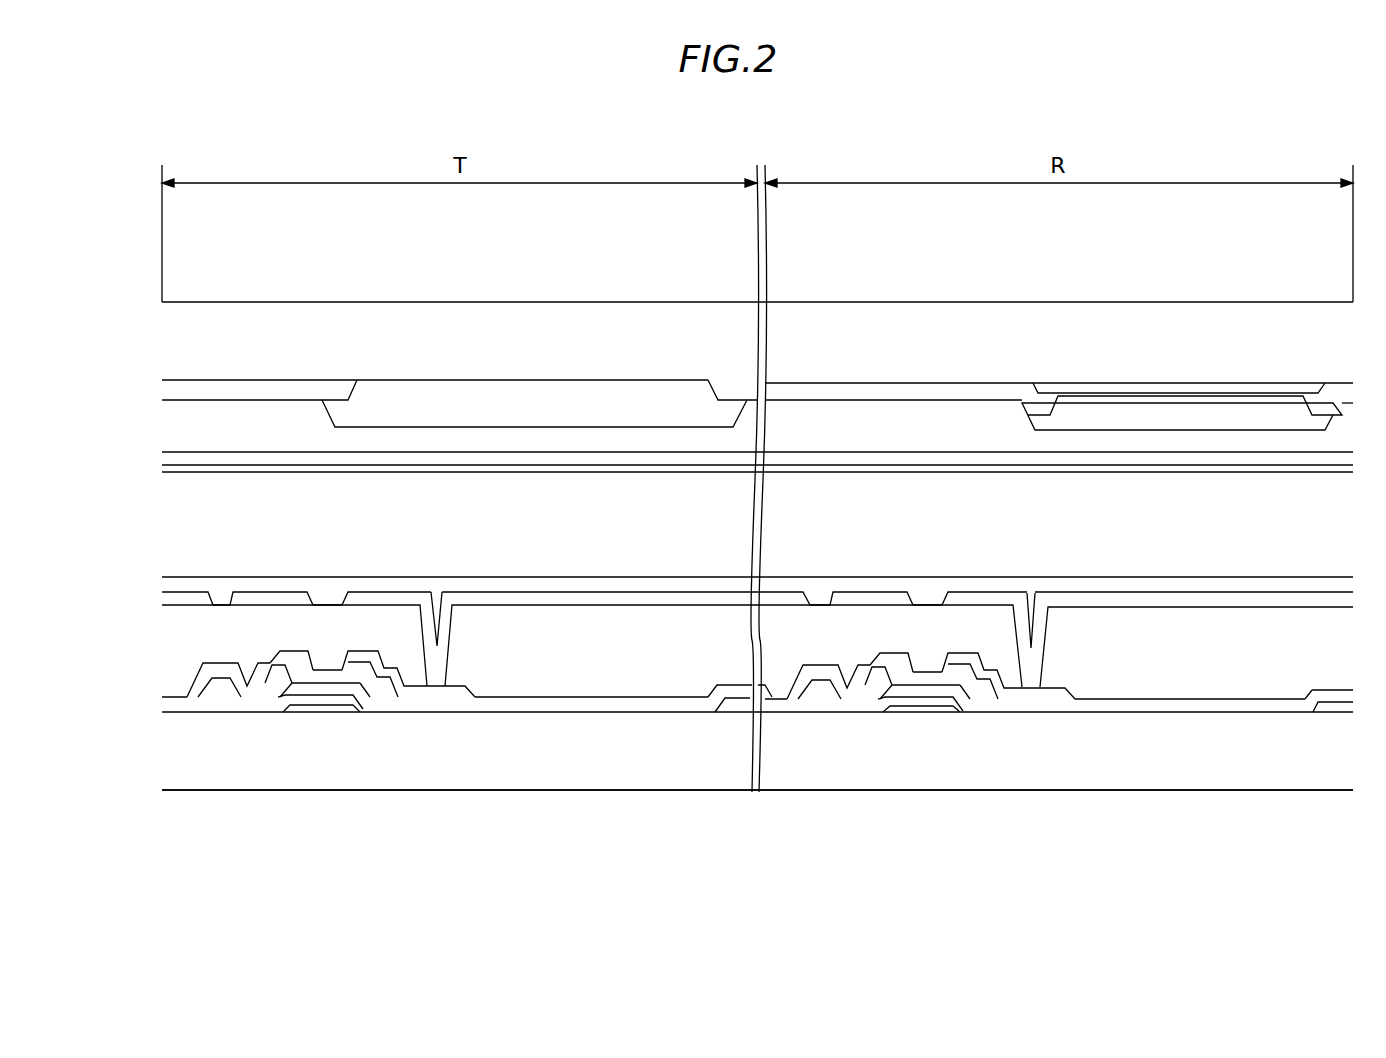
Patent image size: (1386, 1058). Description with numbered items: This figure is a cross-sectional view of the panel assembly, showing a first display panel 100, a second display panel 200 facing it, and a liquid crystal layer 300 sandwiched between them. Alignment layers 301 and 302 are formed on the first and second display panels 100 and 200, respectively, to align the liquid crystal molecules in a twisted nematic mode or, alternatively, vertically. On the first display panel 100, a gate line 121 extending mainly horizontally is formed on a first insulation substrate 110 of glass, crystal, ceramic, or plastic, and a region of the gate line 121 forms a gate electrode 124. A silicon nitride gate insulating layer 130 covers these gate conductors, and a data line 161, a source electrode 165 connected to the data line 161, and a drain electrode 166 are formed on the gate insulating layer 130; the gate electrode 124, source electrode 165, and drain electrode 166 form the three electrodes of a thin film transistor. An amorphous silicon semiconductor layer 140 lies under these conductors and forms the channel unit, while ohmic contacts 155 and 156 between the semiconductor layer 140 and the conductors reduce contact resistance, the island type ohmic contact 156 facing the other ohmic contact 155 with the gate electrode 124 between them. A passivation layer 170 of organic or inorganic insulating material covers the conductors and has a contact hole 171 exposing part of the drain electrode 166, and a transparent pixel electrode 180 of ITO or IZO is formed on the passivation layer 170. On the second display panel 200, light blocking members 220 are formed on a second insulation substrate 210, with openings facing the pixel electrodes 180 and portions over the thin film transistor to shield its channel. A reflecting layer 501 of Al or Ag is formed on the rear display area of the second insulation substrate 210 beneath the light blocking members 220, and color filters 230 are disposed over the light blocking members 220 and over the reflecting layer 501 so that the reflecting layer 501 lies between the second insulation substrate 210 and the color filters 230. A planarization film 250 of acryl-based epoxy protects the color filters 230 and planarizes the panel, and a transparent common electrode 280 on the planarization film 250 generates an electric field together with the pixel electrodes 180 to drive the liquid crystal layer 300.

The first display panel 100 is at (1186, 792).
The first insulation substrate 110 is at (560, 776).
The gate line 121 is at (730, 707).
The gate electrode 124 is at (333, 703).
The gate insulating layer 130 is at (517, 700).
The semiconductor layer 140 is at (313, 678).
The ohmic contact 155 is at (280, 672).
The island type ohmic contact 156 is at (352, 668).
The data line 161 is at (190, 698).
The source electrode 165 is at (260, 698).
The drain electrode 166 is at (420, 690).
The passivation layer 170 is at (600, 683).
The contact hole 171 is at (437, 592).
The pixel electrode 180 is at (578, 603).
The second display panel 200 is at (240, 297).
The second insulation substrate 210 is at (352, 318).
The light blocking member 220 is at (297, 392).
The color filter 230 is at (440, 405).
The planarization film 250 is at (532, 440).
The common electrode 280 is at (688, 462).
The liquid crystal layer 300 is at (170, 519).
The alignment layer 301 is at (222, 590).
The alignment layer 302 is at (627, 472).
The reflecting layer 501 is at (1182, 390).